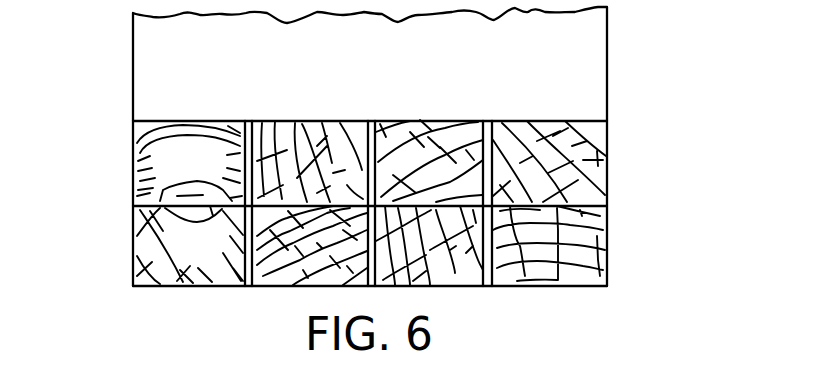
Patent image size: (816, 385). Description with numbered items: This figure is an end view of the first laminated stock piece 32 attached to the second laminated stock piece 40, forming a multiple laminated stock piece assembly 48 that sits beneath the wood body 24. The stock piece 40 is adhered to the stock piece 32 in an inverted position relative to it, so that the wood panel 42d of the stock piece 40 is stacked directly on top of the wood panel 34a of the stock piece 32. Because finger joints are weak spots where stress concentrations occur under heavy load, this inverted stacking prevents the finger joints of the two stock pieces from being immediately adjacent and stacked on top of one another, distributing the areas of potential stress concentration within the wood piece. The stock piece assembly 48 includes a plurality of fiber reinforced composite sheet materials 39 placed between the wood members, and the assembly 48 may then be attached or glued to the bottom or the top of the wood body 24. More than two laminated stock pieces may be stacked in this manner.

The wood body 24 is at (577, 58).
The fiber reinforced composite sheet materials 39 is at (487, 120).
The second laminated stock piece 40 is at (133, 174).
The first laminated stock piece 32 is at (133, 258).
The wood panel 42d is at (212, 170).
The wood panel 34a is at (215, 254).
The multiple laminated stock piece assembly 48 is at (613, 283).